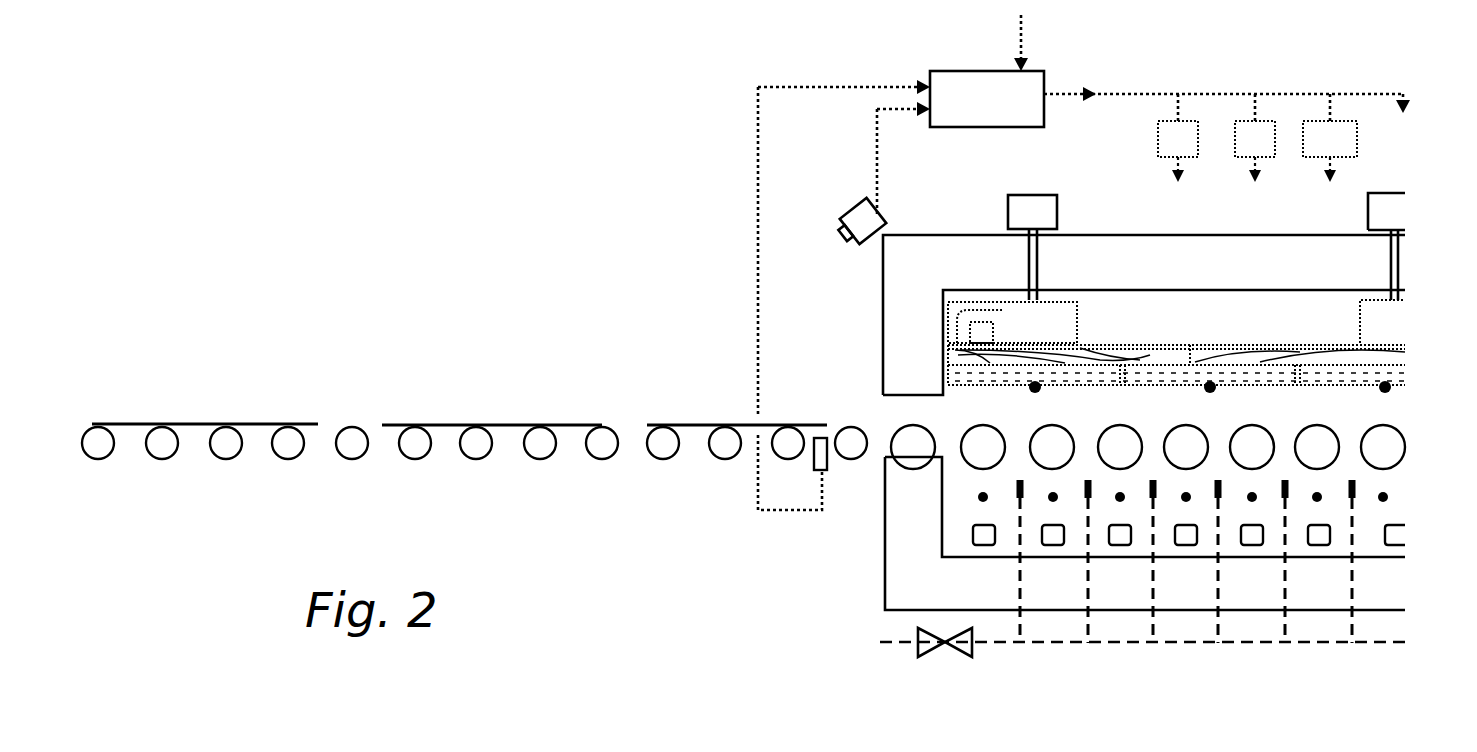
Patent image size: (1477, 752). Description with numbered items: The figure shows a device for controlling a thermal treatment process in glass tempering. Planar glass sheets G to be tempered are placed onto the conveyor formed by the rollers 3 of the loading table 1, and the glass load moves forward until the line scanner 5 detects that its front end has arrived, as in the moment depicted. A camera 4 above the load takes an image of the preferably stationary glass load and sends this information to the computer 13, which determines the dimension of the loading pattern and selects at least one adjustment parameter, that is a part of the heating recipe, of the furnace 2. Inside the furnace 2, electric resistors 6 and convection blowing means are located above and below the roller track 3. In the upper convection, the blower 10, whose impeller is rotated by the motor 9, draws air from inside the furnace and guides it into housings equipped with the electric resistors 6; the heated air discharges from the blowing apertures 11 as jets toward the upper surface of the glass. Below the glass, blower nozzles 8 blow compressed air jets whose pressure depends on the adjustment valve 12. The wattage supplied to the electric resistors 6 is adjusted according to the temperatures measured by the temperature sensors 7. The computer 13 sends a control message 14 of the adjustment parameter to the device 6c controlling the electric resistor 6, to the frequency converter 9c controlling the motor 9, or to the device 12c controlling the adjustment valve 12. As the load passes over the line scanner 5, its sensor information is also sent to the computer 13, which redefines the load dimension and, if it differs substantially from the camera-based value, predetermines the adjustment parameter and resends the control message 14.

The loading table 1 is at (449, 262).
The furnace 2 is at (1100, 235).
The rollers 3 is at (463, 460).
The camera 4 is at (848, 205).
The line scanner 5 is at (828, 470).
The electric resistors 6 is at (1053, 545).
The temperature sensors 7 is at (1388, 392).
The blower nozzles 8 is at (1356, 485).
The motor 9 is at (1008, 205).
The blower 10 is at (1077, 316).
The blowing apertures 11 is at (1312, 385).
The adjustment valve 12 is at (955, 630).
The computer 13 is at (901, 262).
The control message 14 is at (1227, 89).
The device controlling the electric resistor 6c is at (1178, 151).
The frequency converter 9c is at (1255, 151).
The device controlling the adjustment valve 12c is at (1330, 151).
The glass sheets G is at (258, 424).